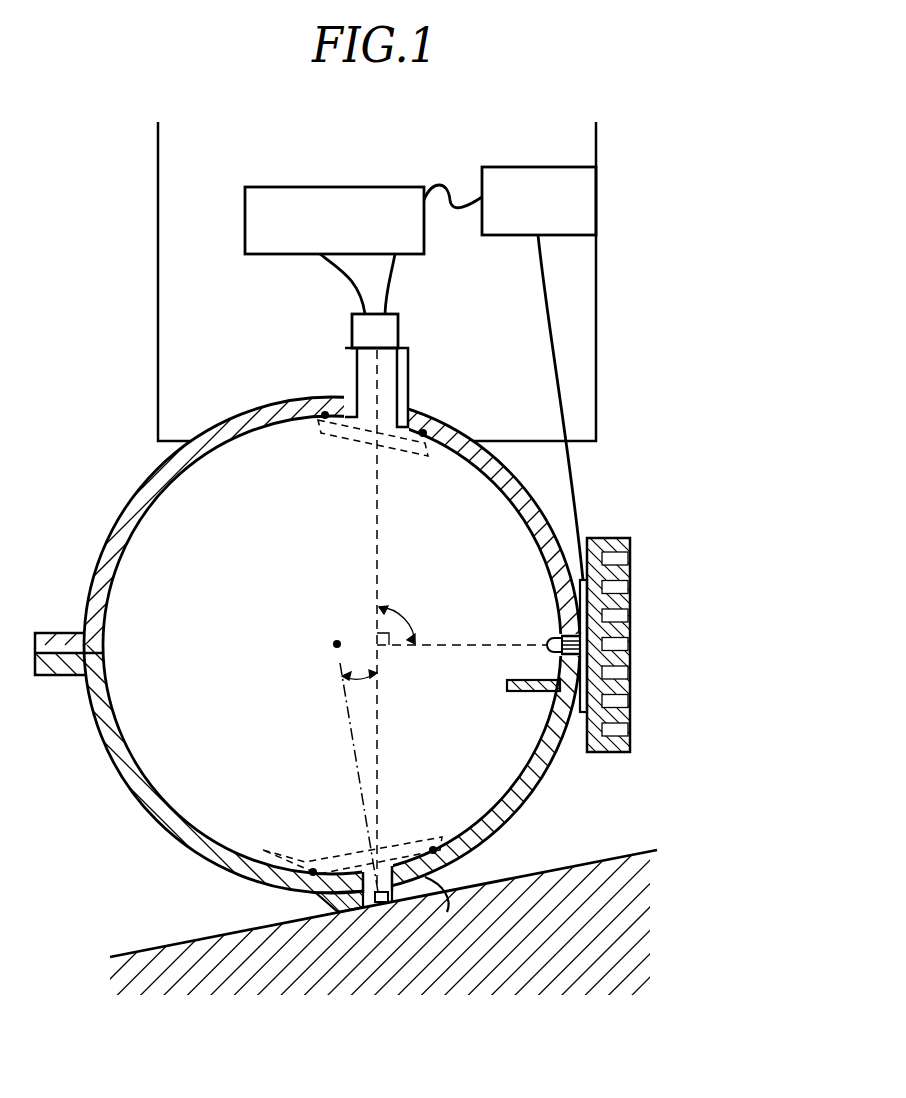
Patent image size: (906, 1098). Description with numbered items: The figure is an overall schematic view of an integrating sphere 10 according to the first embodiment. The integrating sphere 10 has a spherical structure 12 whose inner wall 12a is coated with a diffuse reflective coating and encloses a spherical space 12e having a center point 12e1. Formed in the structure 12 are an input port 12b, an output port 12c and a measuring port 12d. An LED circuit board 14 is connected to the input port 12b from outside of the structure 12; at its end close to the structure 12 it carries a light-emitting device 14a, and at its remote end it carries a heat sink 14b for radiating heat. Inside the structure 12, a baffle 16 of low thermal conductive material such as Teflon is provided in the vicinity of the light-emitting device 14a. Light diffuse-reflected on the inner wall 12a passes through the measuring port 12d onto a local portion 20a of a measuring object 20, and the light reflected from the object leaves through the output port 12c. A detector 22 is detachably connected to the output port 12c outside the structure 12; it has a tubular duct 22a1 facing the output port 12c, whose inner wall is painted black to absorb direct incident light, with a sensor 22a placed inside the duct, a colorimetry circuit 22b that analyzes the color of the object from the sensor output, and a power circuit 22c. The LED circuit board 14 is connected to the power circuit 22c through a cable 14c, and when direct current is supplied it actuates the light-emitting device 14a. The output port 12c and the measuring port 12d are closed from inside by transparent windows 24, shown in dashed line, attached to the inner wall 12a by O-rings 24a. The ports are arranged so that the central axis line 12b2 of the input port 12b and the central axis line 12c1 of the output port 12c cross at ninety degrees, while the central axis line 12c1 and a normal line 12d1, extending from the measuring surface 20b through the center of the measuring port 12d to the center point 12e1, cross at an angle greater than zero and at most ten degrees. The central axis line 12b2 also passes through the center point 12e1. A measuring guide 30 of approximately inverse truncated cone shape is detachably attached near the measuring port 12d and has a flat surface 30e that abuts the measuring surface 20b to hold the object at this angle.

The integrating sphere 10 is at (616, 481).
The structure 12 is at (425, 640).
The inner wall 12a is at (114, 712).
The input port 12b is at (552, 636).
The central axis line of the input port 12b2 is at (445, 655).
The output port 12c is at (368, 405).
The central axis line of the output port 12c1 is at (380, 548).
The measuring port 12d is at (393, 873).
The normal line 12d1 is at (340, 716).
The spherical space 12e is at (334, 600).
The center point 12e1 is at (336, 642).
The LED circuit board 14 is at (584, 713).
The light-emitting device 14a is at (552, 641).
The heat sink 14b is at (621, 753).
The cable 14c is at (582, 500).
The baffle 16 is at (522, 693).
The measuring object 20 is at (438, 920).
The portion of the measuring object 20a is at (378, 905).
The measuring surface 20b is at (500, 880).
The detector 22 is at (451, 283).
The sensor 22a is at (400, 329).
The tubular duct 22a1 is at (408, 380).
The colorimetry circuit 22b is at (359, 187).
The power circuit 22c is at (529, 167).
The windows 24 is at (404, 443).
The O-rings 24a is at (425, 436).
The measuring guide 30 is at (329, 903).
The flat surface 30e is at (447, 905).